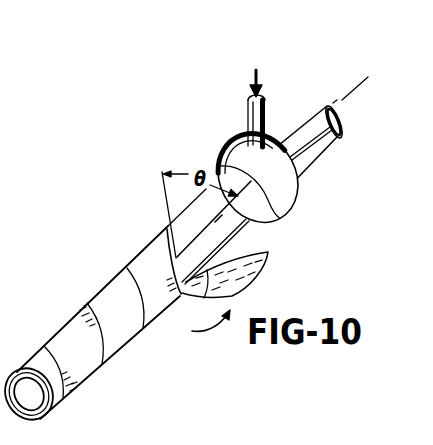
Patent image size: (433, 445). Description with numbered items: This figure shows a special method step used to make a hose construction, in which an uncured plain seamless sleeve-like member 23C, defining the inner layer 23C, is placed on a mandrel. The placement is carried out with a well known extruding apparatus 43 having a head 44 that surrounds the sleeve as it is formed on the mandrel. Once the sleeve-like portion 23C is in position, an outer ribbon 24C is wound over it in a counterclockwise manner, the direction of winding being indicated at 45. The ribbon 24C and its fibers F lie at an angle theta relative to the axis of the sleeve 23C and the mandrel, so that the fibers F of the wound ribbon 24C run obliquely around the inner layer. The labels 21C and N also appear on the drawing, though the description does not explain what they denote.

The tubular coil member 21C is at (357, 86).
The inner layer 23C is at (250, 222).
The outer ribbon 24C is at (272, 258).
The extruding apparatus 43 is at (238, 127).
The head 44 is at (298, 181).
The counterclockwise winding direction 45 is at (216, 333).
The reference point N on tube N is at (311, 119).
The fibers F is at (78, 316).